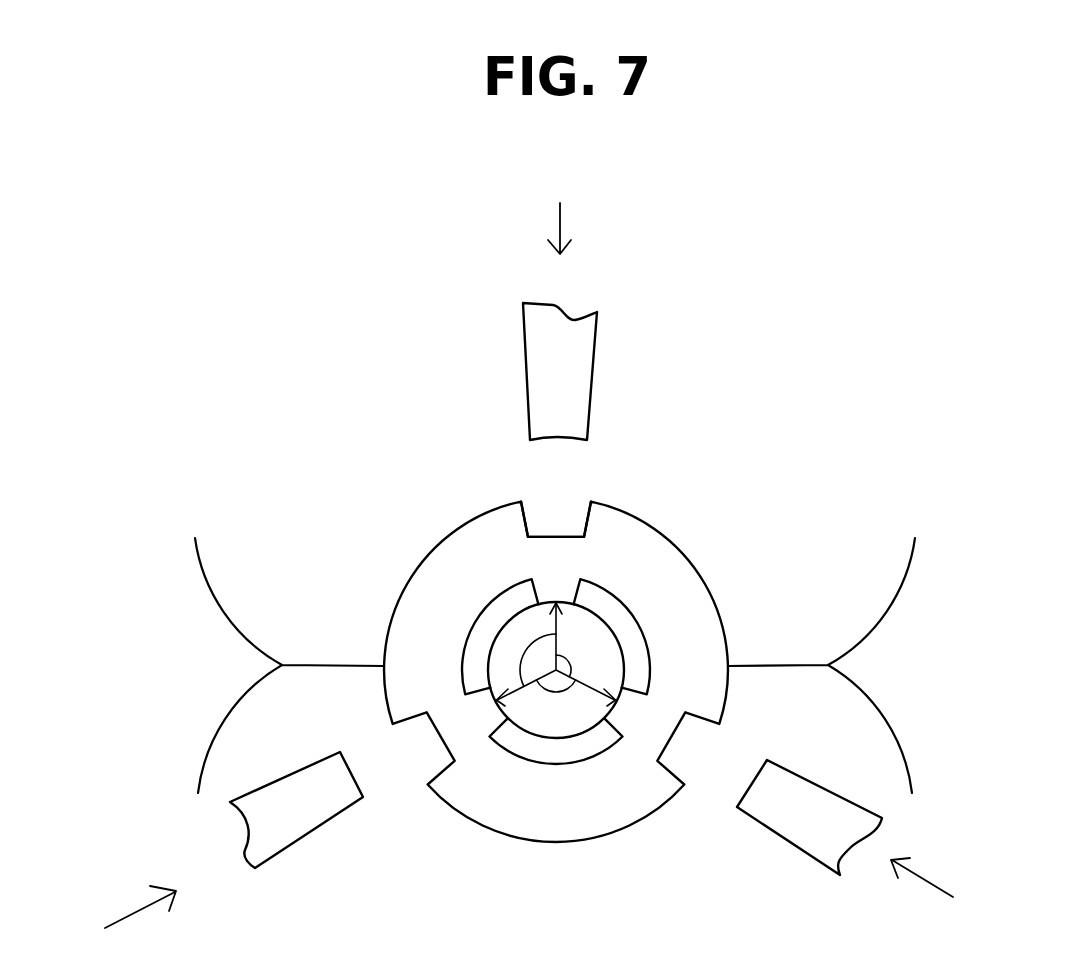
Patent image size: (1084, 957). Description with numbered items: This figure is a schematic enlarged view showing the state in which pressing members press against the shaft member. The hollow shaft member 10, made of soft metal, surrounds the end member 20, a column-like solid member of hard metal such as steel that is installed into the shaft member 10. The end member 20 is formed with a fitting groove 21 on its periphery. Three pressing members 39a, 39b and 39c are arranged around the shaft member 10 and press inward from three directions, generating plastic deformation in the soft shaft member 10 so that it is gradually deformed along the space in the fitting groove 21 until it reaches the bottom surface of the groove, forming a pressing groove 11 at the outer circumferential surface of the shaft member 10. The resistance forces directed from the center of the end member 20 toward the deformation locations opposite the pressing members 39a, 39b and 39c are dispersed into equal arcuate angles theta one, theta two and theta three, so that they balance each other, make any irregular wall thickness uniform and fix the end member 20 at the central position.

The hollow shaft member 10 is at (637, 540).
The pressing groove 11 is at (552, 518).
The end member 20 is at (582, 705).
The fitting groove 21 is at (627, 628).
The pressing member 39a is at (568, 367).
The pressing member 39b is at (785, 827).
The pressing member 39c is at (290, 820).